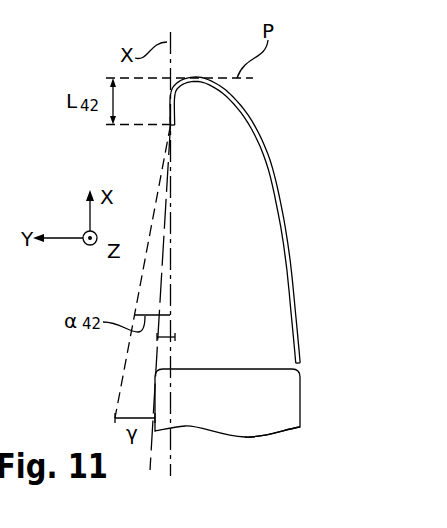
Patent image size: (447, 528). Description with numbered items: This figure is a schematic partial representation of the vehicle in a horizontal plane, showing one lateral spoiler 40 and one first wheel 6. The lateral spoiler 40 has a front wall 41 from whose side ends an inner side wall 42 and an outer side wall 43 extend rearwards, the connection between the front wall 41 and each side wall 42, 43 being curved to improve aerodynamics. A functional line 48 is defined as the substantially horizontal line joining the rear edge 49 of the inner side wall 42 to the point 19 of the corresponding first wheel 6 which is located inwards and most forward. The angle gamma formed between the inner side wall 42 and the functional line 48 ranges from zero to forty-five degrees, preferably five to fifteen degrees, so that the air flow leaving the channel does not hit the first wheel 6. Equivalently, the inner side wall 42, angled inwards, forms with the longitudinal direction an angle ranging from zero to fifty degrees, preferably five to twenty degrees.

The lateral spoiler 40 is at (278, 122).
The front wall 41 is at (195, 77).
The inner side wall 42 is at (168, 115).
The outer side wall 43 is at (293, 260).
The functional line 48 is at (173, 337).
The rear edge 49 is at (172, 128).
The point of the first wheel 19 is at (155, 378).
The first wheel 6 is at (256, 402).